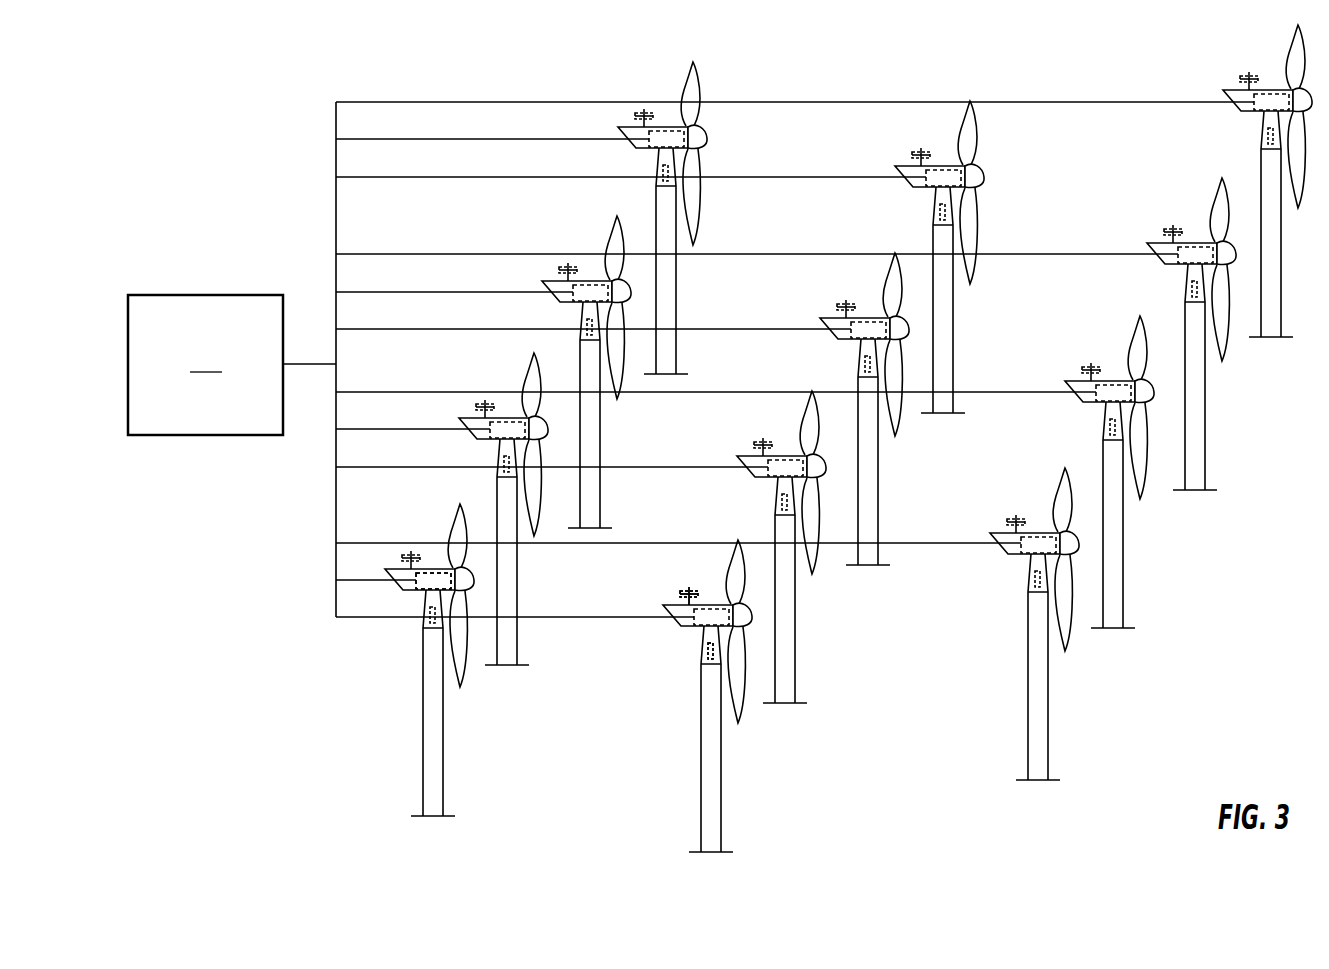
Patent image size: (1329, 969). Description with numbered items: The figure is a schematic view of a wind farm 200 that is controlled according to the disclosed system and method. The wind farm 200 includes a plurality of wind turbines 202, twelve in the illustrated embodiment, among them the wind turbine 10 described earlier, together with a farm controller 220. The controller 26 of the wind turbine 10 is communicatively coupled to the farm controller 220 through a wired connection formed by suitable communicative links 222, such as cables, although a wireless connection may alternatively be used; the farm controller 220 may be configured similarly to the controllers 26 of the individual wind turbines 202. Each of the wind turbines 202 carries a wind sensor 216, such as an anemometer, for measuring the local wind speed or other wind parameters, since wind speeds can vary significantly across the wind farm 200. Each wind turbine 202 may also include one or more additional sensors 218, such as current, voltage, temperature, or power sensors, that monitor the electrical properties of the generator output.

The wind farm 200 is at (245, 162).
The farm controller 220 is at (232, 365).
The communicative links 222 is at (483, 178).
The wind turbines 202 is at (797, 602).
The wind turbine 10 is at (399, 657).
The controller 26 is at (437, 572).
The wind sensor 216 is at (688, 591).
The additional sensors 218 is at (700, 653).